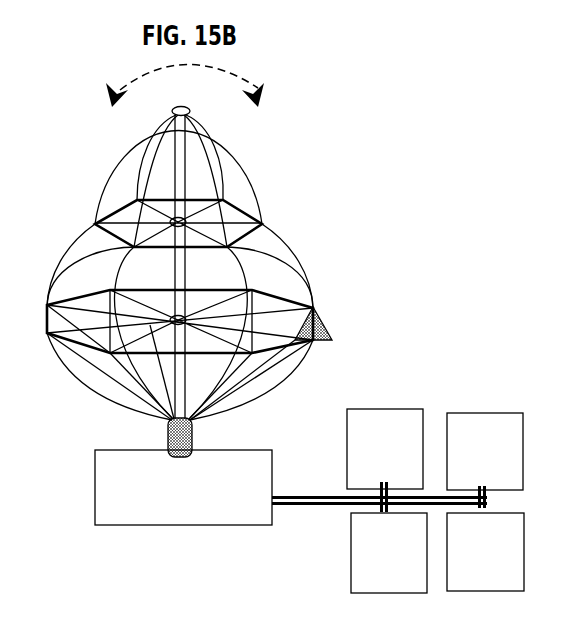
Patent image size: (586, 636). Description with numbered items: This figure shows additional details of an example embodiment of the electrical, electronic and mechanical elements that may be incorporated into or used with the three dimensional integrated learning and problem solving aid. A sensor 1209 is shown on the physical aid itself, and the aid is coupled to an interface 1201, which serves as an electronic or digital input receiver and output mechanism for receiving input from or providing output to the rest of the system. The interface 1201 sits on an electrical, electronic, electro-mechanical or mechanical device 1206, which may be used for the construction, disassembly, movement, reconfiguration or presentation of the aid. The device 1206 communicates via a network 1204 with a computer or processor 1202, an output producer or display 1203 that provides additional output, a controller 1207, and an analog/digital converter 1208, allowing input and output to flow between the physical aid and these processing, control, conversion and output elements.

The interface 1201 is at (192, 428).
The processor 1202 is at (485, 552).
The output 1203 is at (485, 451).
The network 1204 is at (303, 505).
The electro-mechanical or mechanical device 1206 is at (183, 487).
The controller 1207 is at (389, 553).
The analog/digital converter 1208 is at (385, 449).
The sensor 1209 is at (327, 327).